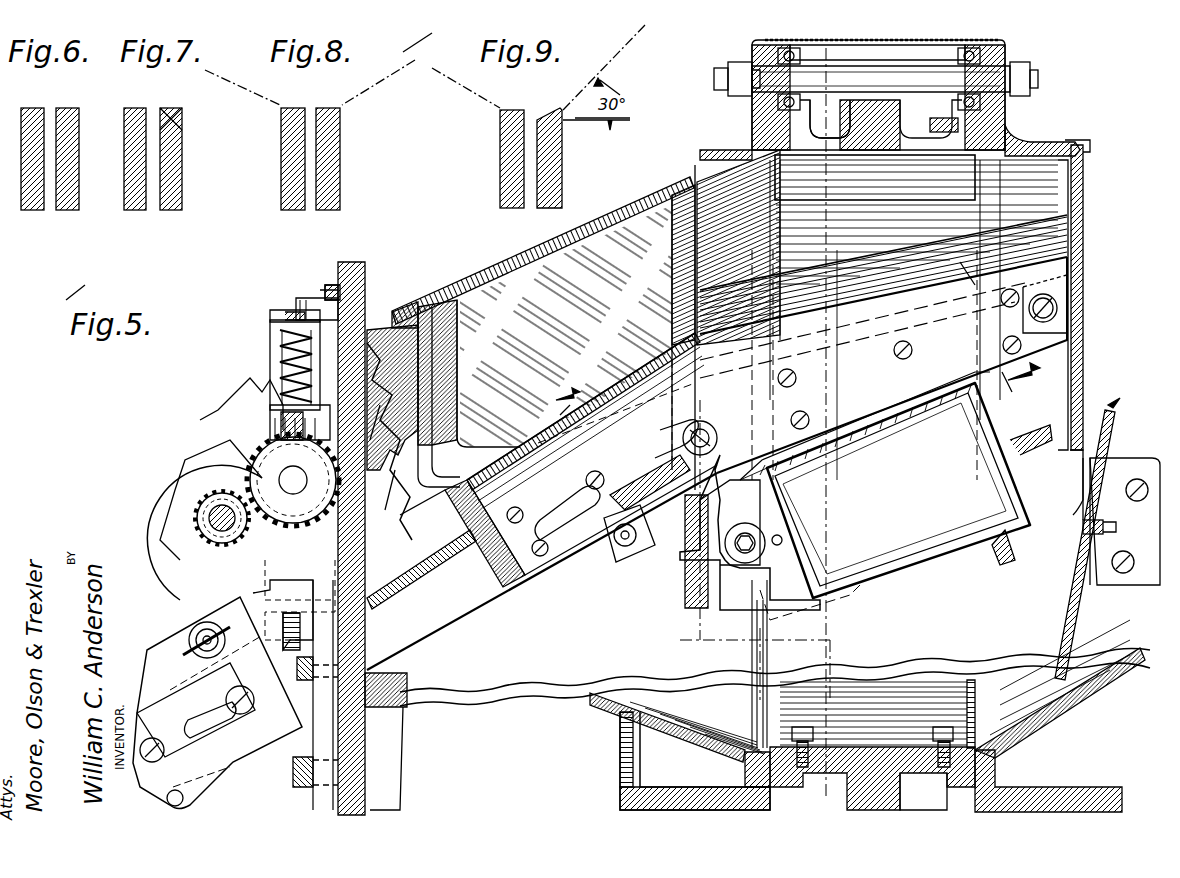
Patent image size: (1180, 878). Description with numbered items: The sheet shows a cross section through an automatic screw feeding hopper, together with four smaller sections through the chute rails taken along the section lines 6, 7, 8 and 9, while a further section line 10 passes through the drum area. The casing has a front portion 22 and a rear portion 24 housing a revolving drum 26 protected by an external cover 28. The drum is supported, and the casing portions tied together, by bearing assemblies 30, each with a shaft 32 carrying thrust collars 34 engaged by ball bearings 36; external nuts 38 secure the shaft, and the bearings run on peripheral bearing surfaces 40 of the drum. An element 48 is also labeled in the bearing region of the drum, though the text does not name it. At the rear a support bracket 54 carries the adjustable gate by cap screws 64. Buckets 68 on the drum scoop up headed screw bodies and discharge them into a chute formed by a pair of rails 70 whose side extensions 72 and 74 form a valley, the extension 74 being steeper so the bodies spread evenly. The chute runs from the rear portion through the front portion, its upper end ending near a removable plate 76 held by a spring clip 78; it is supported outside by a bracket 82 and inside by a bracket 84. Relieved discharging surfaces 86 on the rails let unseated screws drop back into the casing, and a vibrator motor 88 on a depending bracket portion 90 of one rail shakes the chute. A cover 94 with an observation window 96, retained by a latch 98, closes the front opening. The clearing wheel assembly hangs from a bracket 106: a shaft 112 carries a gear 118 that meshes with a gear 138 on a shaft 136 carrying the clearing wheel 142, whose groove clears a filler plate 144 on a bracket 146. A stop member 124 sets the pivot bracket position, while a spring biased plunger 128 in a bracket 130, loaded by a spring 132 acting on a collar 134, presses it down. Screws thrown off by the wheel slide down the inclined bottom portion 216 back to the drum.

In FIG. 5, the section line 6— 6 is at (148, 705).
In FIG. 5, the section line 7— 7 is at (440, 635).
In FIG. 5, the section line 8— 8 is at (706, 400).
In FIG. 5, the section line 9— 9 is at (990, 327).
In FIG. 5, the section line 10— 10 is at (835, 30).
In FIG. 5, the front casing portion 22 is at (640, 760).
In FIG. 5, the rear casing portion 24 is at (1110, 700).
In FIG. 5, the revolving drum 26 is at (1015, 118).
In FIG. 5, the external cover 28 is at (1012, 48).
In FIG. 5, the bearing assembly 30 is at (740, 76).
In FIG. 5, the shaft 32 is at (870, 75).
In FIG. 5, the thrust collar 34 is at (818, 60).
In FIG. 5, the ball bearing 36 is at (960, 36).
In FIG. 5, the external nut 38 is at (1034, 72).
In FIG. 5, the peripheral bearing surface 40 is at (840, 110).
In FIG. 5, the key block 48 is at (930, 122).
In FIG. 5, the support bracket 54 is at (1128, 458).
In FIG. 5, the cap screw 64 is at (1118, 530).
In FIG. 5, the bucket 68 is at (850, 710).
In FIG. 6, the rail 70 is at (63, 210).
In FIG. 7, the rail 70 is at (182, 192).
In FIG. 5, the rail 70 is at (500, 600).
In FIG. 5, the side extension 72 is at (866, 290).
In FIG. 5, the side extension 74 is at (810, 300).
In FIG. 5, the removable plate 76 is at (1083, 185).
In FIG. 5, the spring clip or latch 78 is at (1090, 140).
In FIG. 5, the bracket 82 is at (272, 752).
In FIG. 5, the bracket 84 is at (740, 420).
In FIG. 7, the discharging surface 86 is at (182, 110).
In FIG. 5, the discharging surface 86 is at (455, 575).
In FIG. 5, the vibrator motor 88 is at (912, 582).
In FIG. 5, the depending bracket portion 90 is at (795, 612).
In FIG. 5, the cover 94 is at (425, 300).
In FIG. 5, the observation window 96 is at (496, 275).
In FIG. 5, the latch or fastening means 98 is at (696, 178).
In FIG. 5, the bracket 106 is at (366, 616).
In FIG. 5, the shaft 112 is at (209, 518).
In FIG. 5, the gear 118 is at (185, 497).
In FIG. 5, the stop member 124 is at (262, 603).
In FIG. 5, the spring biased plunger 128 is at (298, 312).
In FIG. 5, the bracket 130 is at (332, 286).
In FIG. 5, the spring 132 is at (275, 348).
In FIG. 5, the collar 134 is at (270, 400).
In FIG. 5, the shaft 136 is at (293, 480).
In FIG. 5, the gear 138 is at (200, 425).
In FIG. 5, the clearing wheel 142 is at (443, 393).
In FIG. 5, the filler plate 144 is at (402, 505).
In FIG. 5, the bracket 146 is at (270, 315).
In FIG. 5, the inclined bottom portion 216 is at (665, 760).